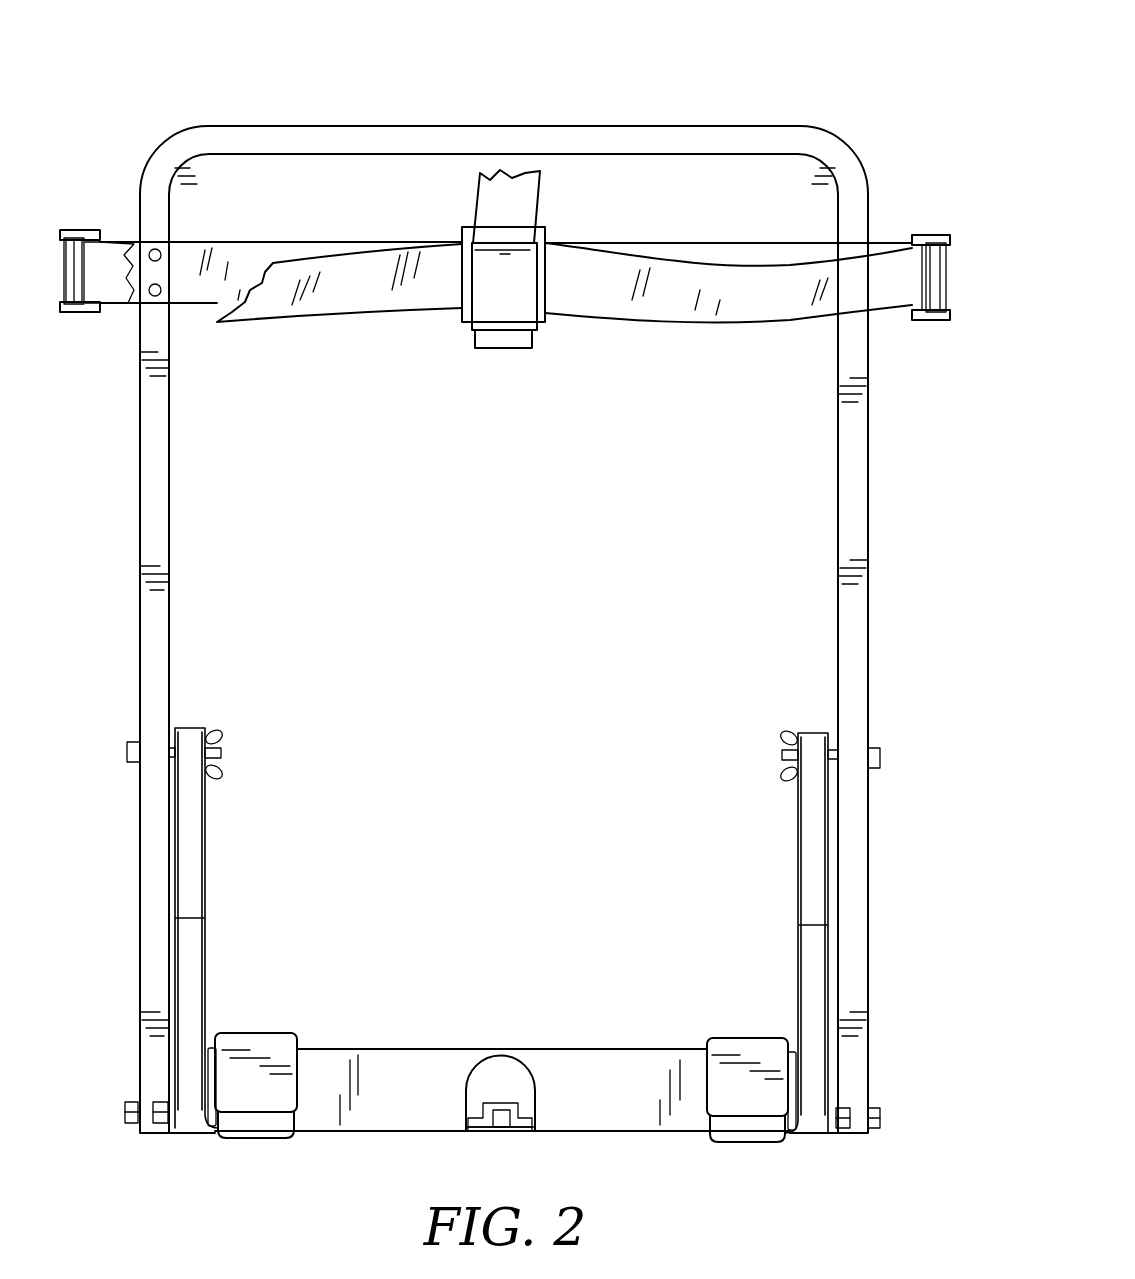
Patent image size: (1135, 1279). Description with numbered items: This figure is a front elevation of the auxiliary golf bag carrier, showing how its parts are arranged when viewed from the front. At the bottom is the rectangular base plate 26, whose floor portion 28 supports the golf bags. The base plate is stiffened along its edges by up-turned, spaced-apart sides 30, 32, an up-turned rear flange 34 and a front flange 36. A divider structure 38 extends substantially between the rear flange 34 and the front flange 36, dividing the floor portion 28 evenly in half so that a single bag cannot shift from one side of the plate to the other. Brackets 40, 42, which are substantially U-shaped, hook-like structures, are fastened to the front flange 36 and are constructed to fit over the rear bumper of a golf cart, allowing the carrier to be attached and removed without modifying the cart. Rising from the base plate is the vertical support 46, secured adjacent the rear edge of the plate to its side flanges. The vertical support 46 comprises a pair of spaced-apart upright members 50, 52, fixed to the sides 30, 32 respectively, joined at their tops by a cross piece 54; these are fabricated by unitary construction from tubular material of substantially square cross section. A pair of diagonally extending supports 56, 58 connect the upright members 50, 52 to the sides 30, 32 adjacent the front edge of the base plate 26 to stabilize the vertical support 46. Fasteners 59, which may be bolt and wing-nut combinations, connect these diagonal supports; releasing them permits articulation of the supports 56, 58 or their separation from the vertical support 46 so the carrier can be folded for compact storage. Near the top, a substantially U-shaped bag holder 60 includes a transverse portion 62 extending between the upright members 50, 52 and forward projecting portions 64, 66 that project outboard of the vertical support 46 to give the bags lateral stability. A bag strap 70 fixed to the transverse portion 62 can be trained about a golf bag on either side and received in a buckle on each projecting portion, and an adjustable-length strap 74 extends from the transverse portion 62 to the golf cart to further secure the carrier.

The base plate 26 is at (611, 1138).
The floor portion 28 is at (495, 1135).
The side 30 is at (150, 1100).
The side 32 is at (862, 1106).
The rear flange 34 is at (505, 1070).
The front flange 36 is at (403, 1107).
The divider structure 38 is at (525, 1110).
The bracket 40 is at (240, 1032).
The bracket 42 is at (757, 1036).
The vertical support 46 is at (504, 573).
The upright member 50 is at (157, 469).
The upright member 52 is at (840, 547).
The cross piece 54 is at (415, 136).
The diagonally extending support 56 is at (214, 917).
The diagonally extending support 58 is at (782, 908).
The fastener 59 is at (136, 760).
The bag holder 60 is at (666, 334).
The transverse portion 62 is at (727, 260).
The forward projecting portion 64 is at (125, 240).
The forward projecting portion 66 is at (893, 250).
The bag strap 70 is at (352, 296).
The adjustable-length strap 74 is at (547, 208).